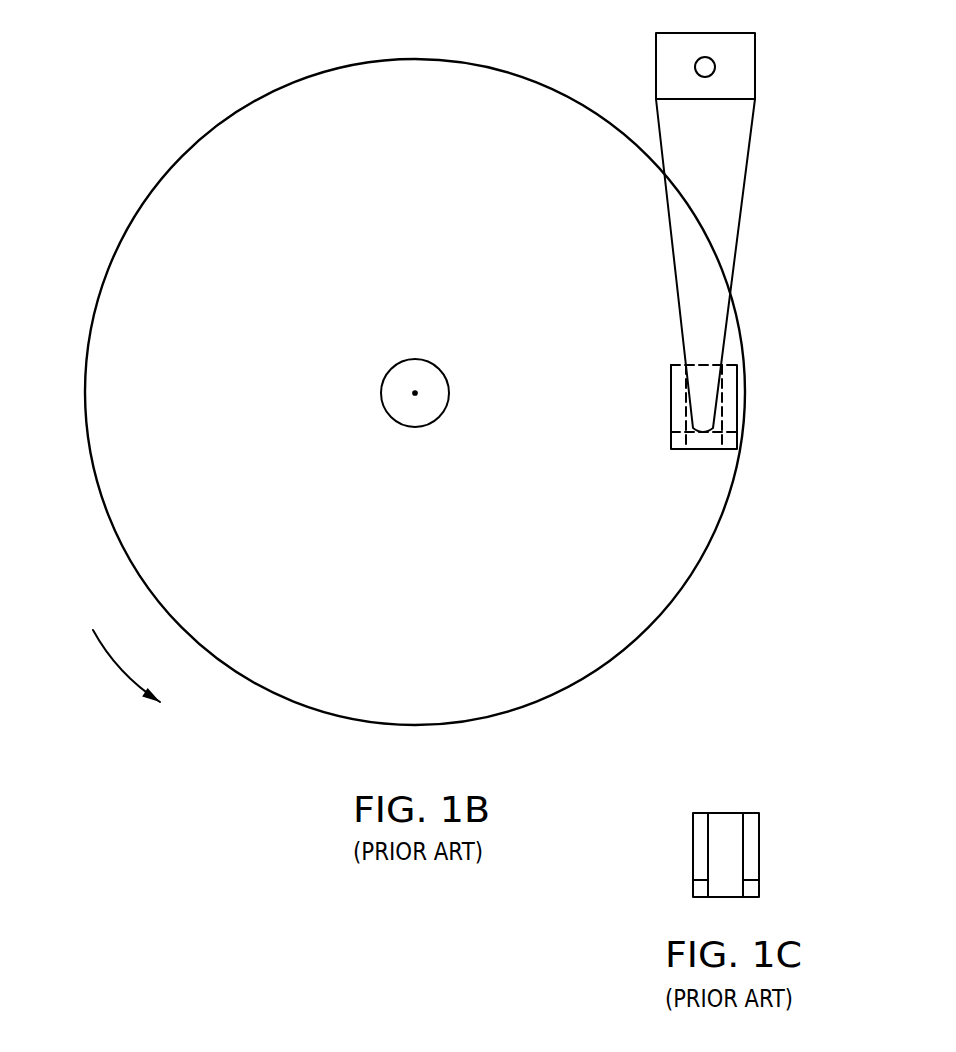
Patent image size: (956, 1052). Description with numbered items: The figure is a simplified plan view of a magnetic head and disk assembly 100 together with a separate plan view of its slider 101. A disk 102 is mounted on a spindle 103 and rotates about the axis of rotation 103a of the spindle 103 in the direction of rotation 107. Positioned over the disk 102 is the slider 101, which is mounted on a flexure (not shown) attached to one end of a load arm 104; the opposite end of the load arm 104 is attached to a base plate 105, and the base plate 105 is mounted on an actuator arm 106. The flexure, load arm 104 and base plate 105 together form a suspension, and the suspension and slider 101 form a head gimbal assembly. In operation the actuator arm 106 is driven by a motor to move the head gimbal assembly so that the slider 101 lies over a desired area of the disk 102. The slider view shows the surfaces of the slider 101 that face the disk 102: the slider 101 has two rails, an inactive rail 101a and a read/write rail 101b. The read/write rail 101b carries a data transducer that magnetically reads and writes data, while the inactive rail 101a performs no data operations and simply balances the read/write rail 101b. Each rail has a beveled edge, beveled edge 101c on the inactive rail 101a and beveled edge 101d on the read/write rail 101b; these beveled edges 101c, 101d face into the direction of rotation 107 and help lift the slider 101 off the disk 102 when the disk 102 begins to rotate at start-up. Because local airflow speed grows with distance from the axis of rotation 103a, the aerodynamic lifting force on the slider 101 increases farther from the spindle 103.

In FIG. 1B, the magnetic head and disk assembly 100 is at (180, 108).
In FIG. 1B, the slider 101 is at (708, 450).
In FIG. 1B, the inactive rail 101a is at (680, 412).
In FIG. 1C, the inactive rail 101a is at (703, 843).
In FIG. 1B, the read/write rail 101b is at (728, 407).
In FIG. 1C, the read/write rail 101b is at (750, 843).
In FIG. 1C, the beveled edge 101c is at (700, 888).
In FIG. 1C, the beveled edge 101d is at (757, 888).
In FIG. 1B, the disk 102 is at (723, 510).
In FIG. 1B, the spindle 103 is at (428, 362).
In FIG. 1B, the axis of rotation 103a is at (413, 392).
In FIG. 1B, the load arm 104 is at (750, 152).
In FIG. 1B, the base plate 105 is at (755, 65).
In FIG. 1B, the actuator arm 106 is at (710, 53).
In FIG. 1B, the direction of rotation 107 is at (118, 663).